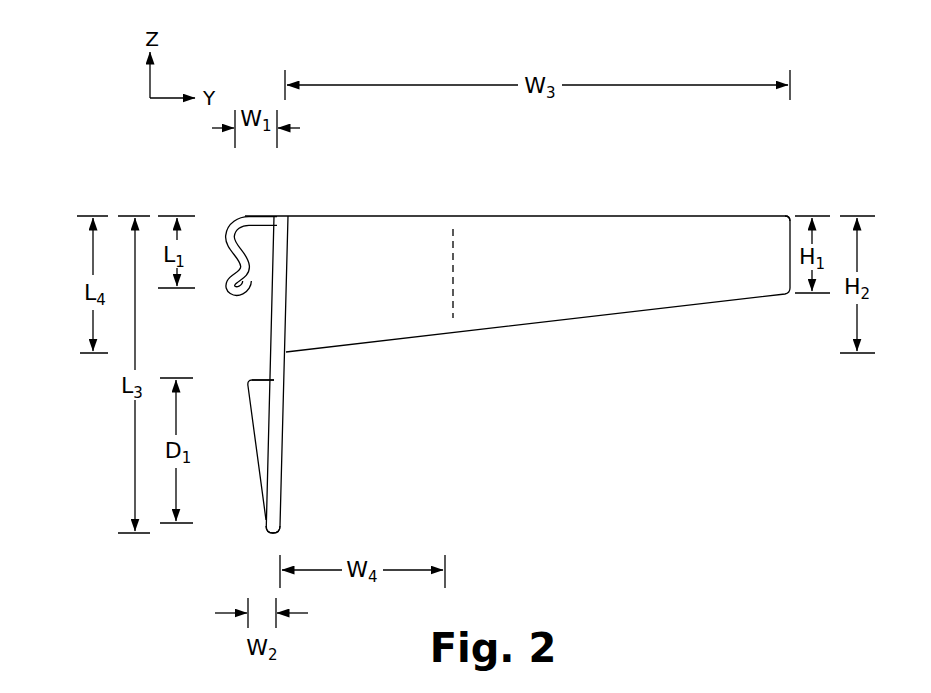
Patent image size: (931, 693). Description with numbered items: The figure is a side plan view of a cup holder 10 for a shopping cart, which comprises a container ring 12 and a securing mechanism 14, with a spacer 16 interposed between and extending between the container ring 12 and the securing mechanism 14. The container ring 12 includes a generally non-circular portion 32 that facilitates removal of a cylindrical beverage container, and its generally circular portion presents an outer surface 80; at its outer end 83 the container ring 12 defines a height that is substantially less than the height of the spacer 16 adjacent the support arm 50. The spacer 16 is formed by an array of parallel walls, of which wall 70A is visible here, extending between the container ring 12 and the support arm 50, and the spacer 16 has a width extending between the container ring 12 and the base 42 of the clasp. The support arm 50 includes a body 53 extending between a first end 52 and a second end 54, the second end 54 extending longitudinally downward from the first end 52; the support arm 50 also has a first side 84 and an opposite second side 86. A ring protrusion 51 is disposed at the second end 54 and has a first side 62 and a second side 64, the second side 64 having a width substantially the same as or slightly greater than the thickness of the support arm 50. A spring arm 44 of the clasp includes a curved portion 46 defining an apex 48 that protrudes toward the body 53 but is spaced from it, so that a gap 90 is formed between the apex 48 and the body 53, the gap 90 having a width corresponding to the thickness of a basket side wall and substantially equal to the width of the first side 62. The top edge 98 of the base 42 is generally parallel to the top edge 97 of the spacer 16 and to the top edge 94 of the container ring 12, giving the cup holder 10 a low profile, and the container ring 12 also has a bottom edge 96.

The cup holder 10 is at (121, 187).
The container ring 12 is at (655, 213).
The securing mechanism 14 is at (222, 213).
The spacer 16 is at (377, 212).
The generally non-circular portion 32 is at (458, 248).
The base 42 is at (258, 216).
The spring arm 44 is at (223, 240).
The curved portion 46 is at (223, 284).
The apex 48 is at (247, 291).
The support arm 50 is at (286, 443).
The ring protrusion 51 is at (256, 450).
The first end 52 is at (288, 240).
The body 53 is at (273, 351).
The second end 54 is at (267, 534).
The first side 62 is at (249, 385).
The second side 64 is at (265, 518).
The wall 70A is at (419, 327).
The outer surface 80 is at (588, 279).
The outer end 83 is at (793, 228).
The first side 84 is at (288, 375).
The second side 86 is at (251, 378).
The gap 90 is at (261, 270).
The top edge 94 is at (560, 216).
The bottom edge 96 is at (558, 322).
The top edge 97 is at (418, 216).
The top edge 98 is at (243, 216).